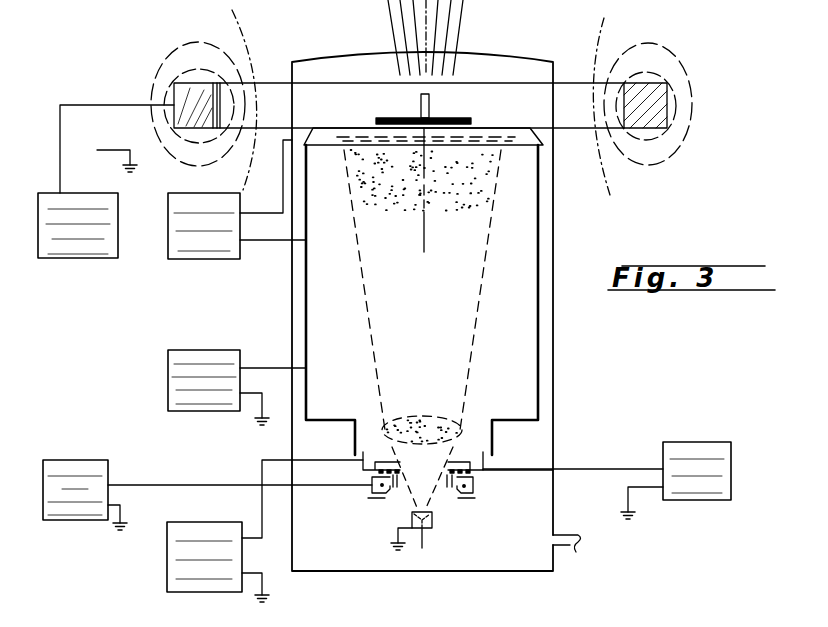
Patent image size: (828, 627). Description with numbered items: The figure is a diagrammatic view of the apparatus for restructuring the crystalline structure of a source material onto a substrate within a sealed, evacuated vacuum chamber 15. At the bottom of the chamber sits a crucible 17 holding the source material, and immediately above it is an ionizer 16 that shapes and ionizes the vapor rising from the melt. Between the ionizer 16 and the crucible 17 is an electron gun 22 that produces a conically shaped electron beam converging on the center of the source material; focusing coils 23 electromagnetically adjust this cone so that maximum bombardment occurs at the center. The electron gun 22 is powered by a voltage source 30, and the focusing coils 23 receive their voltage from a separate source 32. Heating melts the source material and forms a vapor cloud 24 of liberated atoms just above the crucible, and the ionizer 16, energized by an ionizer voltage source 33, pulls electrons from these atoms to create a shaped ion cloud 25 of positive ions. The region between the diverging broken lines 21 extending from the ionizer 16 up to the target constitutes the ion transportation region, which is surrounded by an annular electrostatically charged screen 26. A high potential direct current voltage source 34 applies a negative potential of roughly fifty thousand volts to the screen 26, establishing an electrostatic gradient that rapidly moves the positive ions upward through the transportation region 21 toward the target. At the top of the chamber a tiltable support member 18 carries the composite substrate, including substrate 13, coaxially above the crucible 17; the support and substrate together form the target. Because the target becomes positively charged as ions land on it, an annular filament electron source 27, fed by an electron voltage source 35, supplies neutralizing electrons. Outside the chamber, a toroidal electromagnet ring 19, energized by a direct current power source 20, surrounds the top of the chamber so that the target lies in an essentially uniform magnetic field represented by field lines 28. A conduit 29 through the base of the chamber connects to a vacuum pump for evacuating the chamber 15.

The composite substrate 13 is at (648, 82).
The vacuum chamber 15 is at (553, 238).
The ionizer 16 is at (494, 466).
The crucible 17 is at (409, 504).
The tiltable support member 18 is at (457, 117).
The toroidal electromagnet ring 19 is at (178, 92).
The direct current power source 20 is at (88, 260).
The ion transportation region 21 is at (376, 344).
The electron gun 22 is at (480, 493).
The focusing coils 23 is at (494, 459).
The vapor cloud 24 is at (426, 490).
The ion cloud 25 is at (448, 425).
The electrostatically charged screen 26 is at (553, 191).
The electron source 27 is at (498, 134).
The magnetic field lines 28 is at (398, 42).
The conduit 29 is at (577, 558).
The electron gun voltage source 30 is at (108, 466).
The focusing voltage source 32 is at (663, 455).
The ionizer voltage source 33 is at (216, 515).
The high potential direct current voltage source 34 is at (207, 412).
The electron voltage source 35 is at (203, 262).